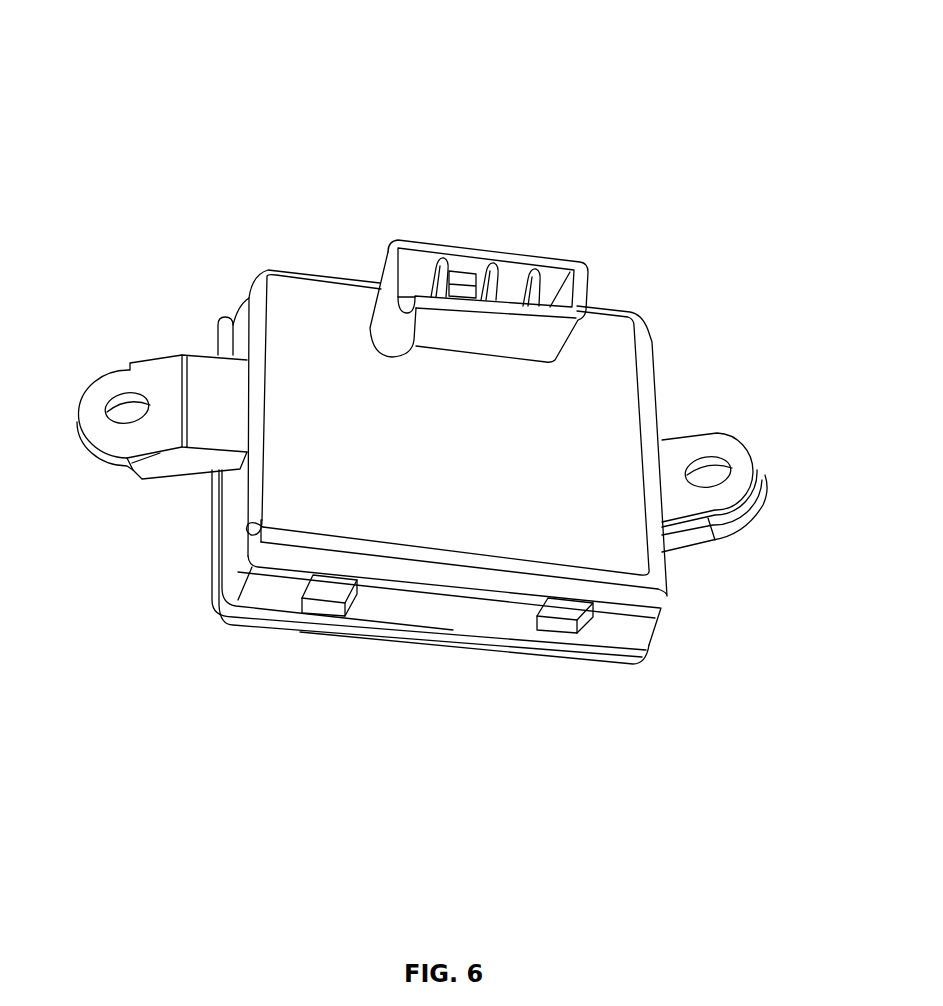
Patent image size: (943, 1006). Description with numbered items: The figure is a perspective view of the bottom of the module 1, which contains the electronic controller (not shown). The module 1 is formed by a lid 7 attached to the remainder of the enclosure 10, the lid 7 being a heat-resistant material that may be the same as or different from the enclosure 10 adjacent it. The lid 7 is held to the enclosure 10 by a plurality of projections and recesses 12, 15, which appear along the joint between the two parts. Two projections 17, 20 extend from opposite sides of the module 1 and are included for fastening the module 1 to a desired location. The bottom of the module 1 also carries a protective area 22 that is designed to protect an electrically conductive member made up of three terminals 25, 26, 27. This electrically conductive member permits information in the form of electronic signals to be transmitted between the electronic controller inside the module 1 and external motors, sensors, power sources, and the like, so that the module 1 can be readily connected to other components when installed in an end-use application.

The module 1 is at (682, 133).
The lid 7 is at (227, 622).
The enclosure 10 is at (315, 310).
The projections and recesses 12 is at (327, 603).
The projections and recesses 15 is at (556, 630).
The projection 17 is at (92, 387).
The projection 20 is at (753, 450).
The protective area 22 is at (398, 237).
The electrically conductive member terminal 25 is at (440, 256).
The electrically conductive member terminal 26 is at (495, 261).
The electrically conductive member terminal 27 is at (545, 258).